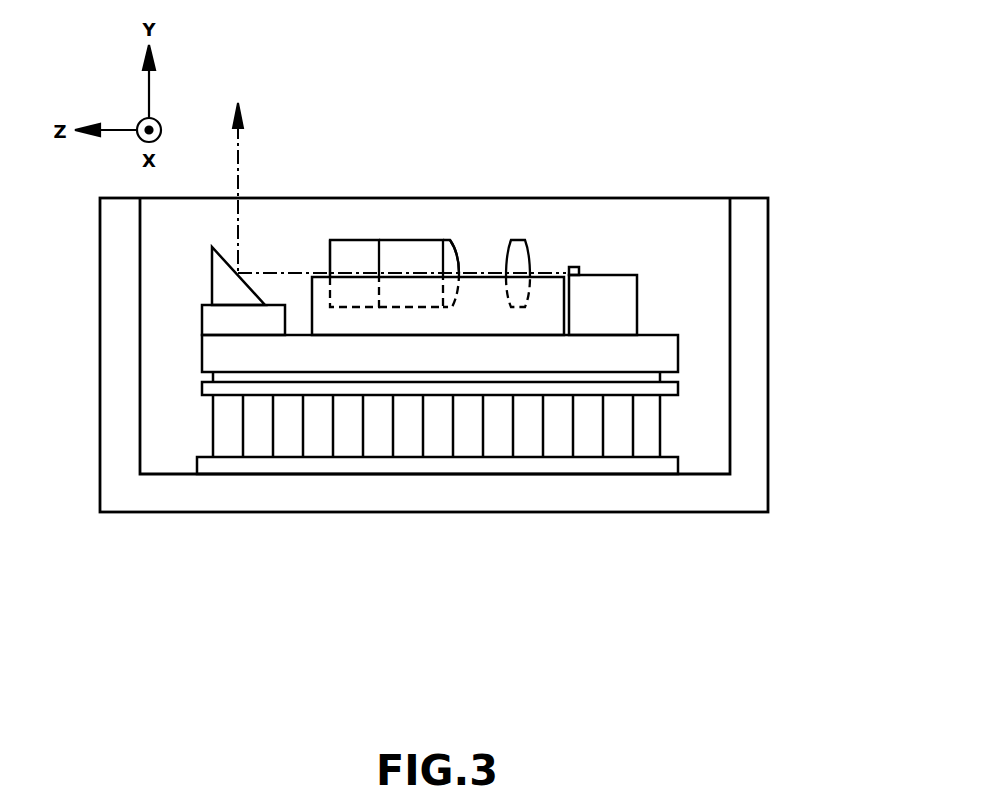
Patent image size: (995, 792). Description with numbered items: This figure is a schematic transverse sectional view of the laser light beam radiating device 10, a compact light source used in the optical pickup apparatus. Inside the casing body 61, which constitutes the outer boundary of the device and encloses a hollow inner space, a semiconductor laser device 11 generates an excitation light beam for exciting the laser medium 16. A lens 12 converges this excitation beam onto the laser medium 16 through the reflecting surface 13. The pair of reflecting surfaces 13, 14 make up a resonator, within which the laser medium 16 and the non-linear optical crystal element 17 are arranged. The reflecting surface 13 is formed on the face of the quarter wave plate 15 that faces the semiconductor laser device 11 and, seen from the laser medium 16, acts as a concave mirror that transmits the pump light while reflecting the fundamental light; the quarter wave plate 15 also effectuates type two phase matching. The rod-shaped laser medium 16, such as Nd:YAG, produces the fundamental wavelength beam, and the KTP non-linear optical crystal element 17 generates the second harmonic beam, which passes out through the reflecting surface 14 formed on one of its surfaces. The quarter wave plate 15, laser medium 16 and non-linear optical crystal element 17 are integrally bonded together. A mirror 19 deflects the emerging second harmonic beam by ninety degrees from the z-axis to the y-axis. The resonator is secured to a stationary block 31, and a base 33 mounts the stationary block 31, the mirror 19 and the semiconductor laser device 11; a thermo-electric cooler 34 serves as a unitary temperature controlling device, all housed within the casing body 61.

The laser light beam radiating device 10 is at (770, 145).
The semiconductor laser device 11 is at (575, 267).
The lens 12 is at (516, 252).
The reflecting surface 13 is at (460, 252).
The reflecting surface 14 is at (320, 251).
The quarter wave plate 15 is at (448, 249).
The laser medium 16 is at (417, 249).
The non-linear optical crystal element 17 is at (352, 249).
The mirror 19 is at (222, 291).
The stationary block 31 is at (540, 312).
The base 33 is at (662, 352).
The thermo-electric cooler 34 is at (646, 428).
The casing body 61 is at (748, 262).